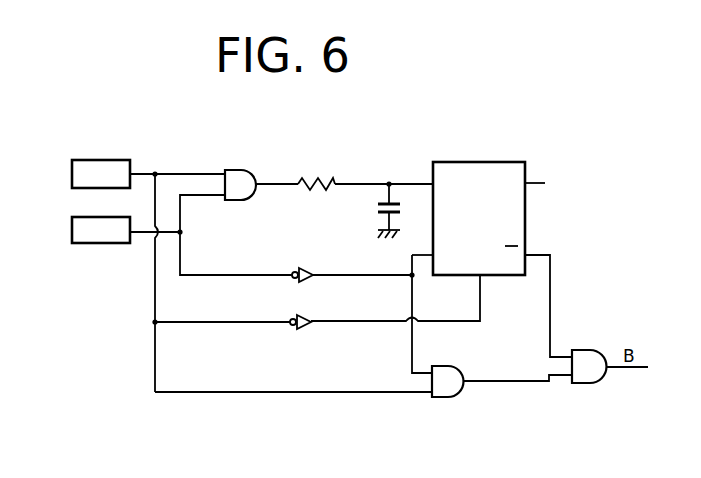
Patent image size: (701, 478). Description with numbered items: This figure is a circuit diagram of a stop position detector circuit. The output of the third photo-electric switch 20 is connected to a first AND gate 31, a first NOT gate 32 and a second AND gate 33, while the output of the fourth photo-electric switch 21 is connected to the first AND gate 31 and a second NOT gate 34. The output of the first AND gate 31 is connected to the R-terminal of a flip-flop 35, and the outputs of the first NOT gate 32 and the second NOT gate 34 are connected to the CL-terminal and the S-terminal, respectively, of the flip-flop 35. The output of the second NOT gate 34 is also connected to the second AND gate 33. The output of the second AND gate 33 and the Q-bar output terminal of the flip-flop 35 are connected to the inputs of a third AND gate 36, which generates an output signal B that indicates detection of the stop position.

The third photo-electric switch 20 is at (98, 160).
The fourth photo-electric switch 21 is at (107, 236).
The first AND gate 31 is at (237, 168).
The first NOT gate 32 is at (312, 327).
The second AND gate 33 is at (460, 371).
The second NOT gate 34 is at (318, 251).
The flip-flop 35 is at (498, 168).
The third AND gate 36 is at (583, 355).